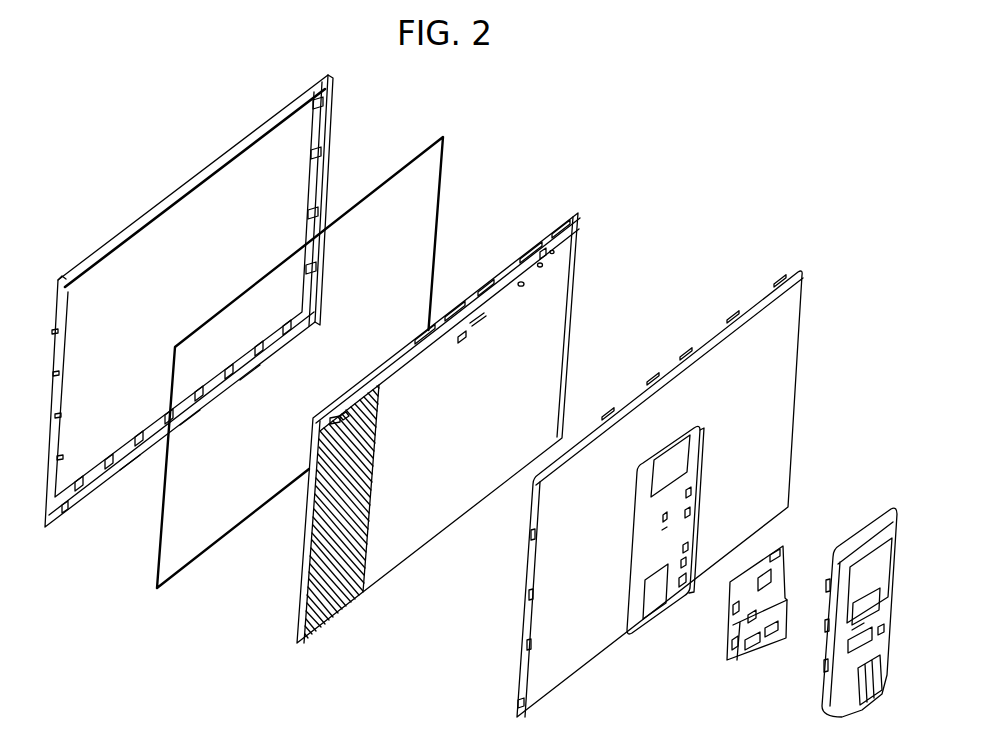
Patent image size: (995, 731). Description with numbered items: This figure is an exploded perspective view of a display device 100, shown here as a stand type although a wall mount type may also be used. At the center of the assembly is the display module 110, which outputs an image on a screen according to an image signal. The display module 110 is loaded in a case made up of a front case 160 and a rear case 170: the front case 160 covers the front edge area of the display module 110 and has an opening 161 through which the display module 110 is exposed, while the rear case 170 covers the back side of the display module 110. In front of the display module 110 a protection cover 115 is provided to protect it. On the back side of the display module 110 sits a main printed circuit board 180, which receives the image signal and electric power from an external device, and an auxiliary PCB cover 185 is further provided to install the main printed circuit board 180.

The display device 100 is at (604, 86).
The display module 110 is at (562, 286).
The protection cover 115 is at (407, 160).
The front case 160 is at (220, 160).
The opening 161 is at (180, 258).
The rear case 170 is at (727, 352).
The main printed circuit board 180 is at (733, 600).
The auxiliary PCB cover 185 is at (825, 652).